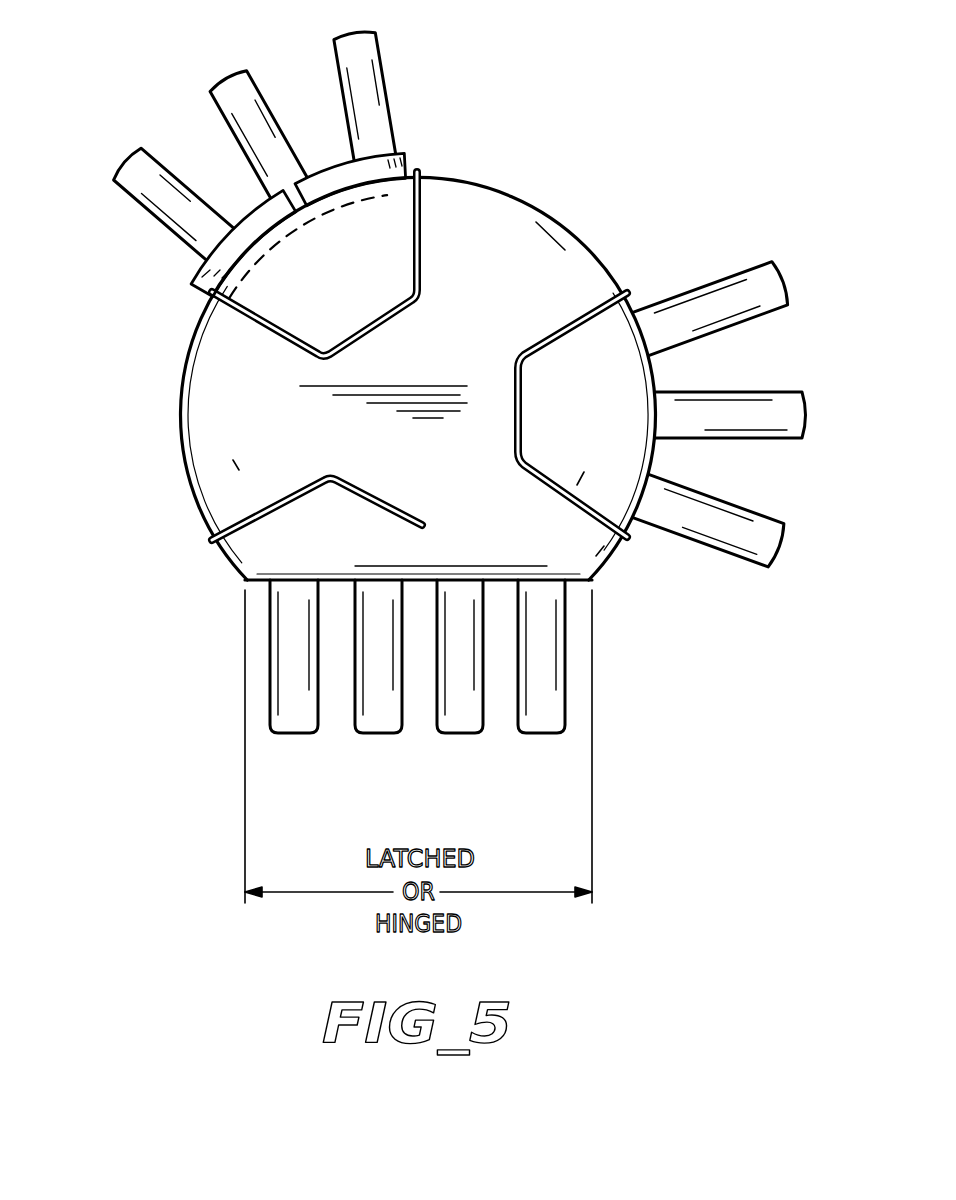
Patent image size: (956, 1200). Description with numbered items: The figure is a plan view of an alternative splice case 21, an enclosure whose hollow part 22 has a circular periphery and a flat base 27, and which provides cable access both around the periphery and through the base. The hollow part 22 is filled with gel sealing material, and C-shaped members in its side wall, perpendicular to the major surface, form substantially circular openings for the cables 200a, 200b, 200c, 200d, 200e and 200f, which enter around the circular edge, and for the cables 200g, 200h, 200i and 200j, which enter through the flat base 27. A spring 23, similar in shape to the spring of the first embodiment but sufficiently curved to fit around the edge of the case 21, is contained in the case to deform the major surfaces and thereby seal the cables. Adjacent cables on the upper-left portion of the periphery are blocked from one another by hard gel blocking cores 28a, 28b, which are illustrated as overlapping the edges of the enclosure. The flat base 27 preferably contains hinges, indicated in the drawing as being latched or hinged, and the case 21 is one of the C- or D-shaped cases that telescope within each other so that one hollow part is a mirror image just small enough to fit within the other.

The case 21 is at (678, 153).
The hollow part 22 is at (238, 491).
The spring 23 is at (290, 342).
The flat base 27 is at (247, 581).
The hard gel blocking core 28a is at (205, 278).
The hard gel blocking core 28b is at (407, 153).
The cable 200a is at (173, 208).
The cable 200b is at (247, 120).
The cable 200c is at (360, 87).
The cable 200d is at (725, 292).
The cable 200e is at (732, 420).
The cable 200f is at (718, 522).
The cable 200g is at (545, 712).
The cable 200h is at (460, 710).
The cable 200i is at (377, 710).
The cable 200j is at (295, 720).